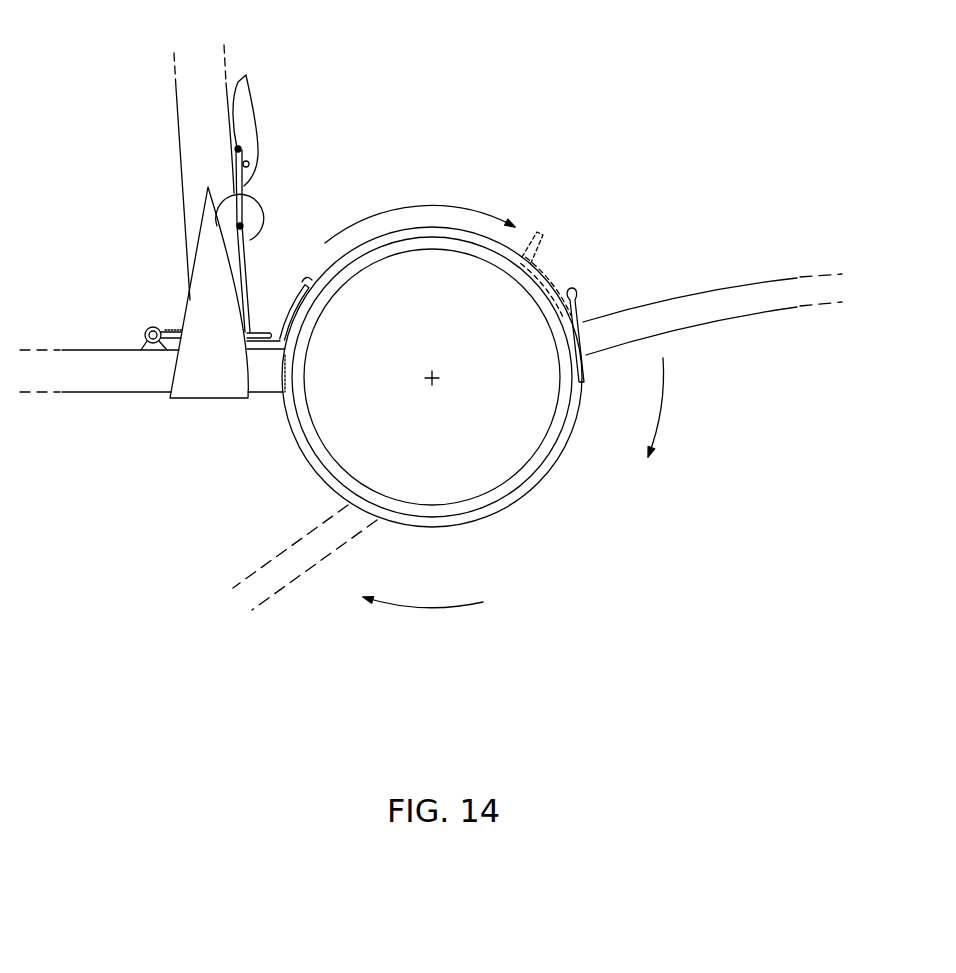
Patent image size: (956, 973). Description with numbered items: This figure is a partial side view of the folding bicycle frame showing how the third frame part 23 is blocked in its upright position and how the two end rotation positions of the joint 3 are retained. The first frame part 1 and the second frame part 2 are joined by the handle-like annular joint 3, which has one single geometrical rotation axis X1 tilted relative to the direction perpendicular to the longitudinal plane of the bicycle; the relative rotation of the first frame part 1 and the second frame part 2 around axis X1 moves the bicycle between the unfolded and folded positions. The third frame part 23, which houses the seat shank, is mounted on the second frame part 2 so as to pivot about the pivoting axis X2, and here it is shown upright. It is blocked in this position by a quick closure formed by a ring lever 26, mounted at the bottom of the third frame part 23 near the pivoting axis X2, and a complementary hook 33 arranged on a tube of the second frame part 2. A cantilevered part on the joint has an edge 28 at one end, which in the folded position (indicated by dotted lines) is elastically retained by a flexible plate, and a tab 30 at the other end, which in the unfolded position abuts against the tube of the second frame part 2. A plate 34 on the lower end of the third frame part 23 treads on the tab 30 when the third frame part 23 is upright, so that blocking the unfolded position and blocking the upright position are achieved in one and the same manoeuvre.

The first frame part 1 is at (707, 290).
The second frame part 2 is at (93, 393).
The joint 3 is at (509, 516).
The third frame part 23 is at (178, 140).
The ring lever 26 is at (245, 98).
The edge 28 is at (308, 278).
The tab 30 is at (262, 352).
The hook 33 is at (260, 218).
The plate 34 is at (258, 327).
The geometrical rotation axis X1 is at (434, 379).
The pivoting axis X2 is at (152, 328).